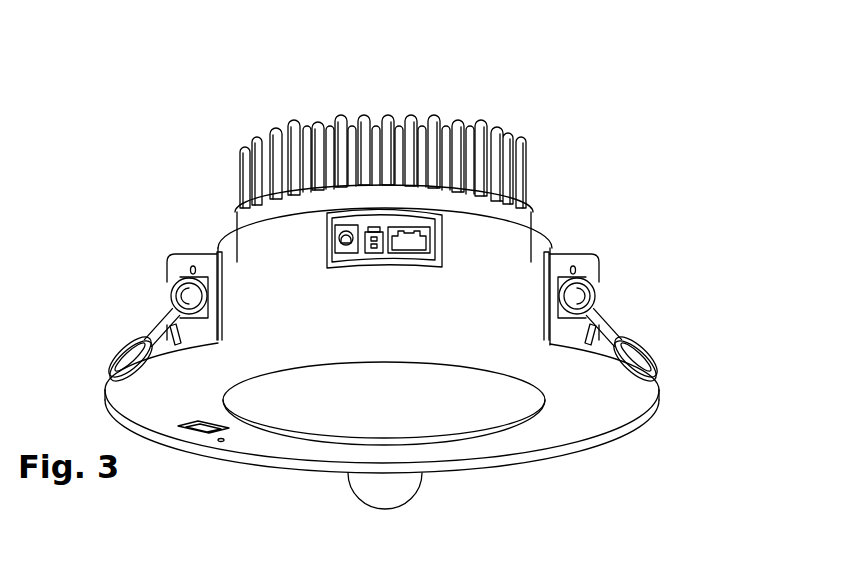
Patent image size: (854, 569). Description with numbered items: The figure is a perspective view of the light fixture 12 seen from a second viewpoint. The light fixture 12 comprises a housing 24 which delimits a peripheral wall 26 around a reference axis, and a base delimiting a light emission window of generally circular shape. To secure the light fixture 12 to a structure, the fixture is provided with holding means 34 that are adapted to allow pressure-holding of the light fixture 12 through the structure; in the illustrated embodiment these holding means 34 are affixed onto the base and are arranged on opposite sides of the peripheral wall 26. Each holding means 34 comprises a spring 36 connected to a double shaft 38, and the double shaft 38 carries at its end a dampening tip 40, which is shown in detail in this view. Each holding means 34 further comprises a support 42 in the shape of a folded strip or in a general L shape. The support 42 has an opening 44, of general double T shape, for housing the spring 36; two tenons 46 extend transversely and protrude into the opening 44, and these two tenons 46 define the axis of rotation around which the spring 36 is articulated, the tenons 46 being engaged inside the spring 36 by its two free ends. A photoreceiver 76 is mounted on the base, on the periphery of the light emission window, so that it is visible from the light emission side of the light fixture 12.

The light fixture 12 is at (577, 145).
The housing 24 is at (540, 225).
The peripheral wall 26 is at (240, 262).
The holding means 34 is at (160, 287).
The spring 36 is at (598, 281).
The double shaft 38 is at (612, 318).
The dampening tip 40 is at (663, 342).
The support 42 is at (565, 257).
The opening 44 is at (168, 293).
The tenons 46 is at (206, 295).
The photoreceiver 76 is at (203, 433).